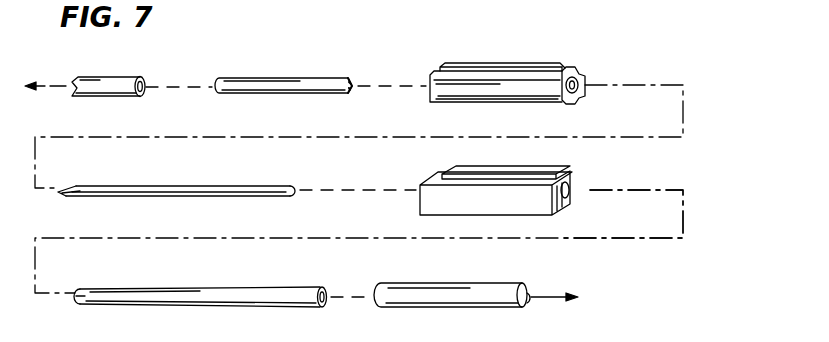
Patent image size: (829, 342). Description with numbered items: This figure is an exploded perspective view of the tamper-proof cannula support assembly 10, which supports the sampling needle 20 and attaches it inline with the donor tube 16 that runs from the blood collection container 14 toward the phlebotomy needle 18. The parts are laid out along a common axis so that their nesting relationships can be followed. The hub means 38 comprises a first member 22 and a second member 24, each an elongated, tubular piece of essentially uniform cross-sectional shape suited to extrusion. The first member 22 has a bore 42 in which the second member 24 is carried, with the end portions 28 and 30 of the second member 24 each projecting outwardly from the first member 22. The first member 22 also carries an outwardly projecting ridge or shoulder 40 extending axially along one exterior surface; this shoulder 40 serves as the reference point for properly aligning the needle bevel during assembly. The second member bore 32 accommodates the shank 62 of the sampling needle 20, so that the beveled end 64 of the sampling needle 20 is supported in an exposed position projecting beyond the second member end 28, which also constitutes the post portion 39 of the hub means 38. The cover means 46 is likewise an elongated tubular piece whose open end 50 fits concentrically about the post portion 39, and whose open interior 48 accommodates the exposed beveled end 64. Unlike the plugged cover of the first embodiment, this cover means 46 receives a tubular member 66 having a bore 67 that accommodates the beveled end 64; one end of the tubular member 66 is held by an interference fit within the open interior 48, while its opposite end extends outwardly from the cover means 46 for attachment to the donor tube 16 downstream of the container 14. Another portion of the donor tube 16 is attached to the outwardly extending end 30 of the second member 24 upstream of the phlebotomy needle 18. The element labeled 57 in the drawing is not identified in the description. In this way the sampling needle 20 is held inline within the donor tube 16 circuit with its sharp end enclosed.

The tamper-proof cannula support assembly 10 is at (514, 72).
The blood collection container 14 is at (50, 86).
The donor tube 16 is at (112, 96).
The phlebotomy needle 18 is at (625, 300).
The sampling needle 20 is at (182, 178).
The first member 22 is at (529, 190).
The second member 24 is at (217, 299).
The second member end portion 28 is at (82, 305).
The second member end portion 30 is at (306, 294).
The second member bore 32 is at (326, 306).
The hub means 38 is at (580, 238).
The post portion 39 is at (82, 292).
The ridge or shoulder 40 is at (532, 172).
The first member bore 42 is at (578, 188).
The cover means 46 is at (503, 57).
The open interior 48 is at (586, 78).
The open end portion 50 is at (578, 96).
The housing end 57 is at (434, 70).
The shank 62 is at (268, 190).
The beveled end 64 is at (82, 190).
The tubular member 66 is at (272, 86).
The bore 67 is at (352, 84).